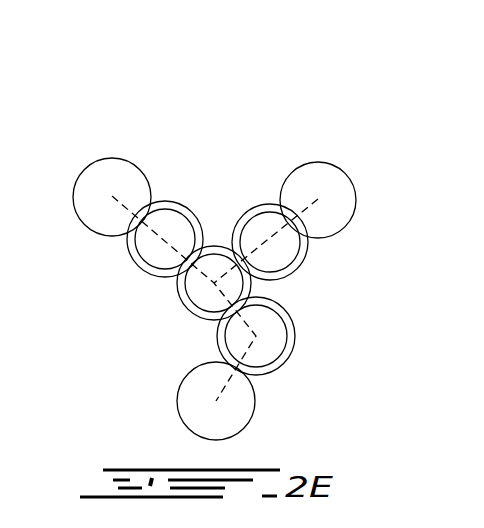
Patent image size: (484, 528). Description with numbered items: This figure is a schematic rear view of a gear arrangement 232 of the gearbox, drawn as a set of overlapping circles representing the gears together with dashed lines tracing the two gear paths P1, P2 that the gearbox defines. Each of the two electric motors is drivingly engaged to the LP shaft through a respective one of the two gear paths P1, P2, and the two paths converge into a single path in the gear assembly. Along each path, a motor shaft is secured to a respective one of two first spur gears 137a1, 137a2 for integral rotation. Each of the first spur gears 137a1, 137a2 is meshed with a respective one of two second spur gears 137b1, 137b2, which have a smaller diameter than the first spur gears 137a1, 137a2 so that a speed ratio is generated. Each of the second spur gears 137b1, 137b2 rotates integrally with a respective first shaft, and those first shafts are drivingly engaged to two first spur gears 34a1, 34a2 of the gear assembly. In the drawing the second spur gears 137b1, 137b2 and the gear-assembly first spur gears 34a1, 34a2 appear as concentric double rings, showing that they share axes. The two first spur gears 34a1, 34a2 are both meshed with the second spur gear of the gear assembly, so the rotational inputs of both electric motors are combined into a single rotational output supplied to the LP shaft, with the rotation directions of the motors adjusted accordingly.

The electrode arrangement / assembly 232 is at (80, 116).
The first spur gear 137a1 is at (115, 159).
The first spur gear 137a2 is at (338, 165).
The second spur gear 137b1 is at (147, 276).
The second spur gear 137b2 is at (307, 245).
The first spur gear of the gear assembly 34a1 is at (127, 260).
The first spur gear of the gear assembly 34a2 is at (290, 280).
The gear path P1 is at (278, 233).
The gear path P2 is at (155, 233).